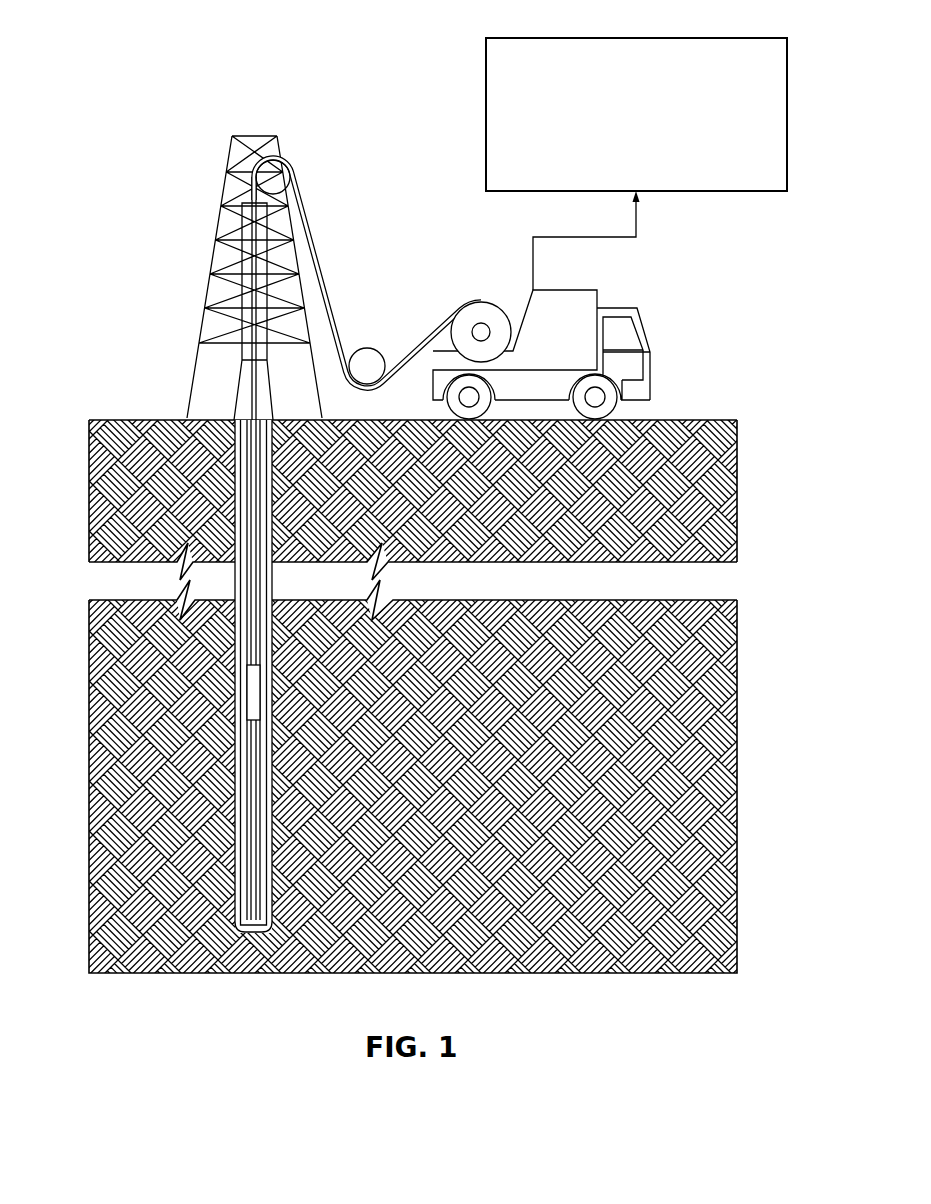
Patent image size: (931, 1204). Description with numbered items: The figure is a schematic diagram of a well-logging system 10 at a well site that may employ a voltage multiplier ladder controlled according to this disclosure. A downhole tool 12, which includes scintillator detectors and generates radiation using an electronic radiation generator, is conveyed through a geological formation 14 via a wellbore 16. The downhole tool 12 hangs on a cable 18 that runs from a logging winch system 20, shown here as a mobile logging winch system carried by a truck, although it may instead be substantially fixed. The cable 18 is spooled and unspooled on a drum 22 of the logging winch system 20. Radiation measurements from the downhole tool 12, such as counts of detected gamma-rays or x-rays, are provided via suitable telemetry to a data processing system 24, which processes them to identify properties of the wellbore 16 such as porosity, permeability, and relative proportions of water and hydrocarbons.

The well-logging system 10 is at (147, 165).
The downhole tool 12 is at (250, 690).
The geological formation 14 is at (100, 742).
The wellbore 16 is at (236, 470).
The cable 18 is at (333, 266).
The logging winch system 20 is at (541, 305).
The drum 22 is at (483, 302).
The data processing system 24 is at (743, 38).